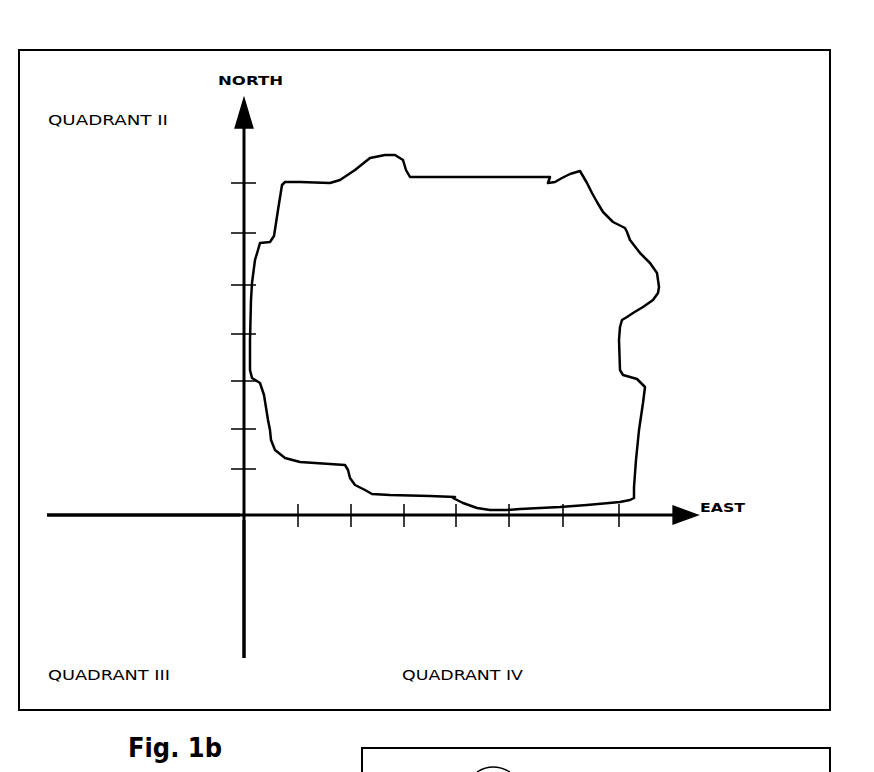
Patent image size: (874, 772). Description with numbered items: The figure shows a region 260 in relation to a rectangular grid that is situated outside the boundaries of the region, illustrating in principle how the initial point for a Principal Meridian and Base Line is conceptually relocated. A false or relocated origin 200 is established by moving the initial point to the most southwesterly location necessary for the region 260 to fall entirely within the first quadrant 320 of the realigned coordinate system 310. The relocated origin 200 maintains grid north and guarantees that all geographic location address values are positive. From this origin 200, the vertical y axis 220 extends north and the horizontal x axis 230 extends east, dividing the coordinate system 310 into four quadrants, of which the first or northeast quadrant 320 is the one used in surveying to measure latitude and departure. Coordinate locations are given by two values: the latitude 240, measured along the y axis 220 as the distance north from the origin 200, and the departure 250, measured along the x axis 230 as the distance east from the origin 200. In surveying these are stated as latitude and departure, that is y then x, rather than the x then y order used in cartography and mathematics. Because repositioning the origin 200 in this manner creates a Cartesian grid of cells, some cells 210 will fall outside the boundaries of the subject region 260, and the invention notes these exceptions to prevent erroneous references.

The relocated origin 200 is at (232, 508).
The cells outside region boundaries 210 is at (257, 490).
The Y axis 220 is at (232, 620).
The X axis 230 is at (47, 527).
The Y axis values - latitude 240 is at (197, 184).
The X axis values - departure 250 is at (615, 552).
The region 260 is at (633, 228).
The coordinate system 310 is at (161, 50).
The Quadrant I 320 is at (542, 101).